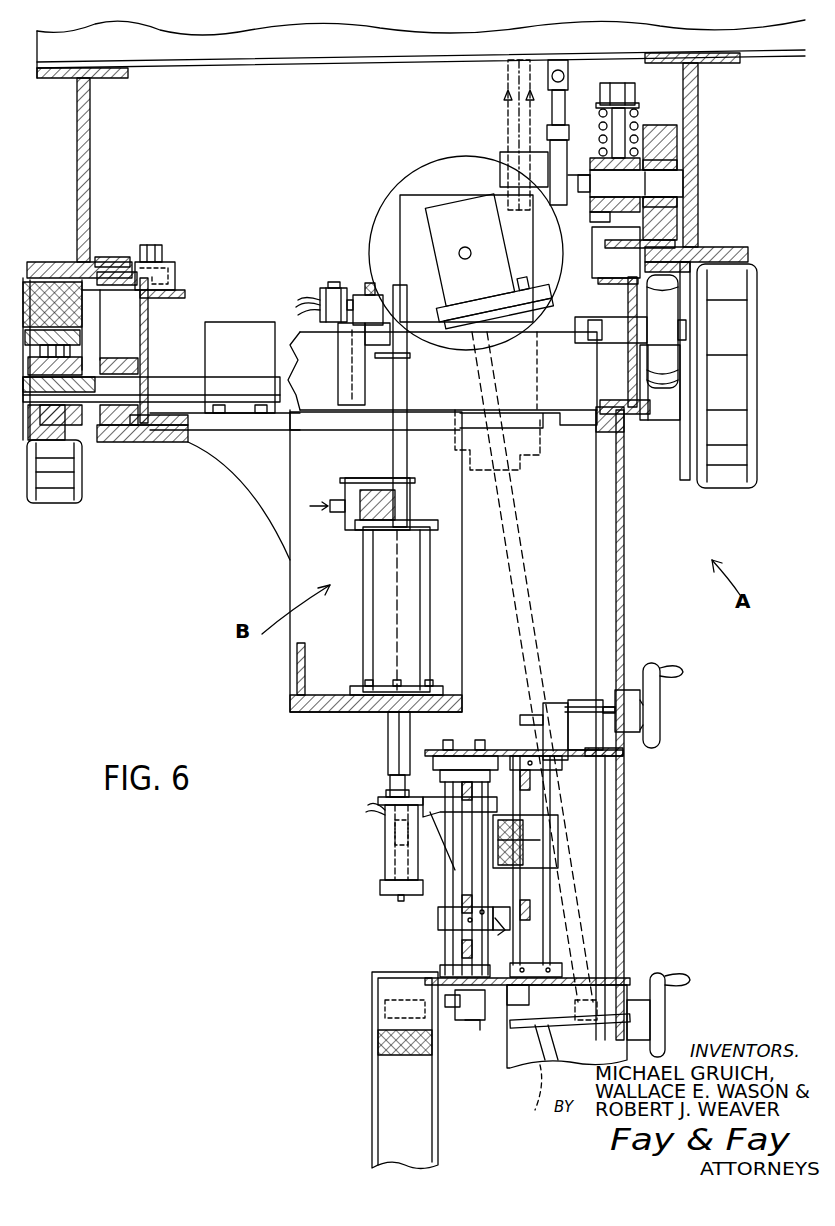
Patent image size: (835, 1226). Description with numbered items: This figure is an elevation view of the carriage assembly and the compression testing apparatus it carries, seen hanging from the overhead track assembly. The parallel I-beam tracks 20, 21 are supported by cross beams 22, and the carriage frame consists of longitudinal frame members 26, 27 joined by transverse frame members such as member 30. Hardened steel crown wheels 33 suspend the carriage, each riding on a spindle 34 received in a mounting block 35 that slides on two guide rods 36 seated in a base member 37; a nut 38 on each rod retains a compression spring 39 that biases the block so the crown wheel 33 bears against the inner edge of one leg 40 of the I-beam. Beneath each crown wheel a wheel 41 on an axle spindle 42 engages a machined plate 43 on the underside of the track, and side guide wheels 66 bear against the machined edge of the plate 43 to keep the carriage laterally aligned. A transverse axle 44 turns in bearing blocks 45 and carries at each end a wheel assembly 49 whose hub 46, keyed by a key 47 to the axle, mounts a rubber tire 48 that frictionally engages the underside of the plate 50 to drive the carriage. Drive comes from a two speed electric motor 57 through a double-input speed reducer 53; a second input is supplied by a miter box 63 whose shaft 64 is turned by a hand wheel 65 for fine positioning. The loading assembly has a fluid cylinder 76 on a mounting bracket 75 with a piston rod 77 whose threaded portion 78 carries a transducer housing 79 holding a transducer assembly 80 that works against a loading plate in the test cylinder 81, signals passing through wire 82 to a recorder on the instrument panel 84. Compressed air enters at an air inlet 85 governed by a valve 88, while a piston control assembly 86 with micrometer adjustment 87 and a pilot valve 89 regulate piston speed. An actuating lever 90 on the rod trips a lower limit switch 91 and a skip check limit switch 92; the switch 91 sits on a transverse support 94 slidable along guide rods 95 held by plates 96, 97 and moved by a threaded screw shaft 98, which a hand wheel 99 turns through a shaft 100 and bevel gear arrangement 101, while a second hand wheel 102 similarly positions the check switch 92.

The I-beam track 20 is at (90, 155).
The I-beam track 21 is at (699, 175).
The cross beam 22 is at (728, 32).
The longitudinal frame member 26 is at (170, 442).
The longitudinal frame member 27 is at (622, 432).
The transverse frame member 30 is at (452, 366).
The crown wheel 33 is at (672, 135).
The spindle 34 is at (662, 185).
The mounting block 35 is at (598, 205).
The guide rod 36 is at (622, 125).
The base member 37 is at (600, 322).
The nut 38 is at (618, 90).
The compression spring 39 is at (565, 116).
The leg of I-beam 40 is at (118, 258).
The wheel 41 is at (668, 298).
The axle spindle 42 is at (627, 358).
The machined plate 43 is at (104, 270).
The transverse axle 44 is at (195, 368).
The bearing block 45 is at (150, 355).
The wheel hub 46 is at (70, 415).
The key 47 is at (78, 350).
The rubber tire 48 is at (58, 503).
The wheel assembly 49 is at (92, 358).
The plate 50 is at (36, 265).
The speed reducer 53 is at (405, 232).
The two speed electric motor 57 is at (436, 172).
The miter box 63 is at (455, 235).
The shaft 64 is at (535, 582).
The hand wheel 65 is at (526, 1098).
The side guide wheel 66 is at (185, 265).
The mounting bracket 75 is at (325, 622).
The fluid cylinder 76 is at (420, 590).
The piston rod 77 is at (392, 740).
The threaded portion 78 is at (390, 768).
The transducer housing 79 is at (385, 850).
The transducer assembly 80 is at (385, 873).
The test cylinder 81 is at (372, 1036).
The wire 82 is at (378, 816).
The instrument panel 84 is at (625, 830).
The air inlet 85 is at (332, 500).
The piston control assembly 86 is at (345, 275).
The micrometer adjustment 87 is at (370, 292).
The valve 88 is at (355, 478).
The pilot valve 89 is at (300, 312).
The actuating lever 90 is at (450, 804).
The lower limit switch 91 is at (505, 928).
The skip check limit switch 92 is at (515, 846).
The transverse support 94 is at (440, 913).
The guide rod 95 is at (448, 745).
The plate 96 is at (525, 730).
The plate 97 is at (575, 965).
The threaded screw shaft 98 is at (462, 868).
The hand wheel 99 is at (660, 973).
The shaft 100 is at (523, 1015).
The bevel gear arrangement 101 is at (468, 1022).
The hand wheel 102 is at (655, 728).